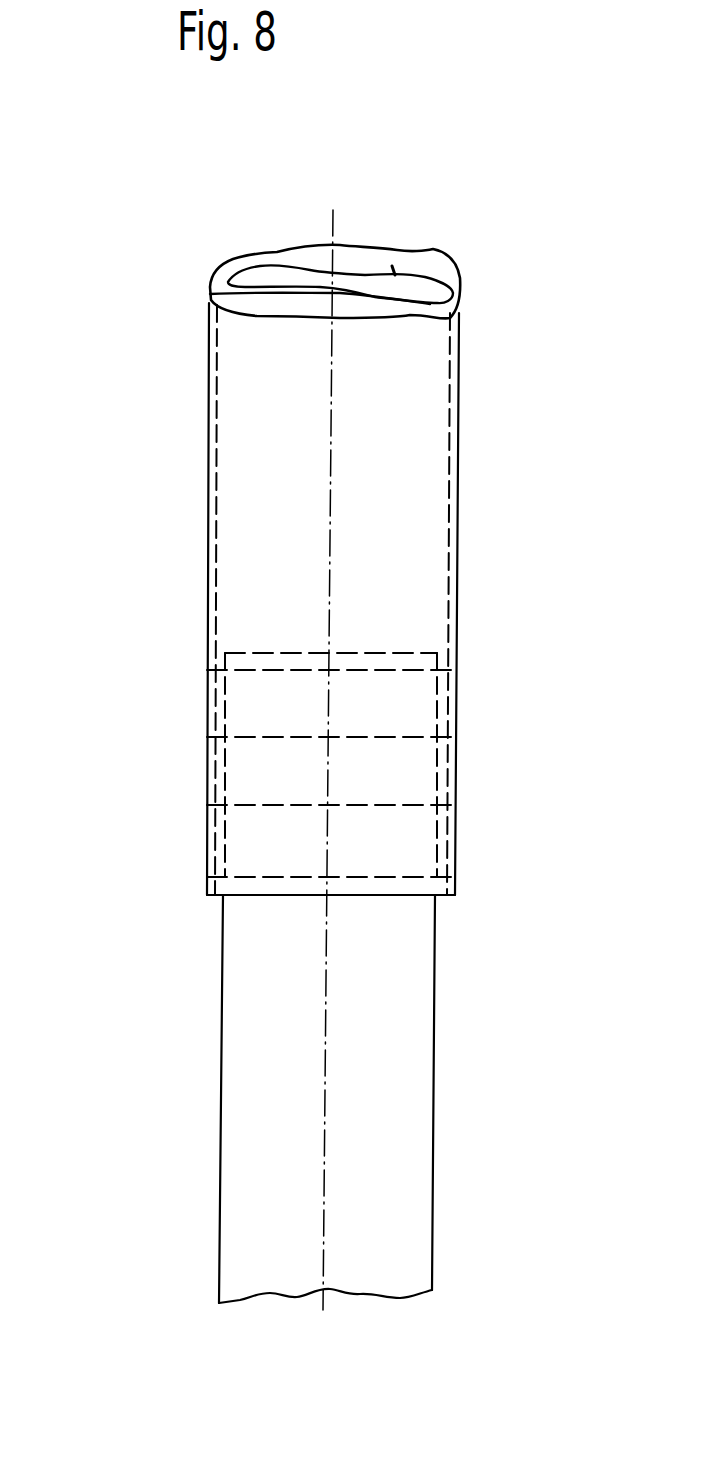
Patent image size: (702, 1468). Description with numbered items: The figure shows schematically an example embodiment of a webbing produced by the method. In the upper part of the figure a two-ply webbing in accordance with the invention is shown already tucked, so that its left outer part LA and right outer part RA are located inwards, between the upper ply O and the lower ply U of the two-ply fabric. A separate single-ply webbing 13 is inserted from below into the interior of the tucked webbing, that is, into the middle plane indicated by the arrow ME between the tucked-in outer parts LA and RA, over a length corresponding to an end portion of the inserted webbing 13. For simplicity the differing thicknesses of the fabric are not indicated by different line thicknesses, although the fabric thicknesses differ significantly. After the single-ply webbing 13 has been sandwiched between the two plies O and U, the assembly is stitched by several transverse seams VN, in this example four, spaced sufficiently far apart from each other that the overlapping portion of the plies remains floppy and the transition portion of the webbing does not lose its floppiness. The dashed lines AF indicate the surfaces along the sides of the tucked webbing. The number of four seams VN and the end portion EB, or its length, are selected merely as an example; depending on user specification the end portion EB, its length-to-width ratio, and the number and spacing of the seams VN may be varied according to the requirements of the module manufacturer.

The webbing 13 is at (390, 1145).
The upper ply O is at (400, 400).
The lower ply U is at (357, 247).
The right outer part RA is at (270, 283).
The middle plane ME is at (391, 283).
The left outer part LA is at (313, 304).
The contact surface AF is at (216, 502).
The seams VN is at (223, 875).
The end portion EB is at (530, 657).